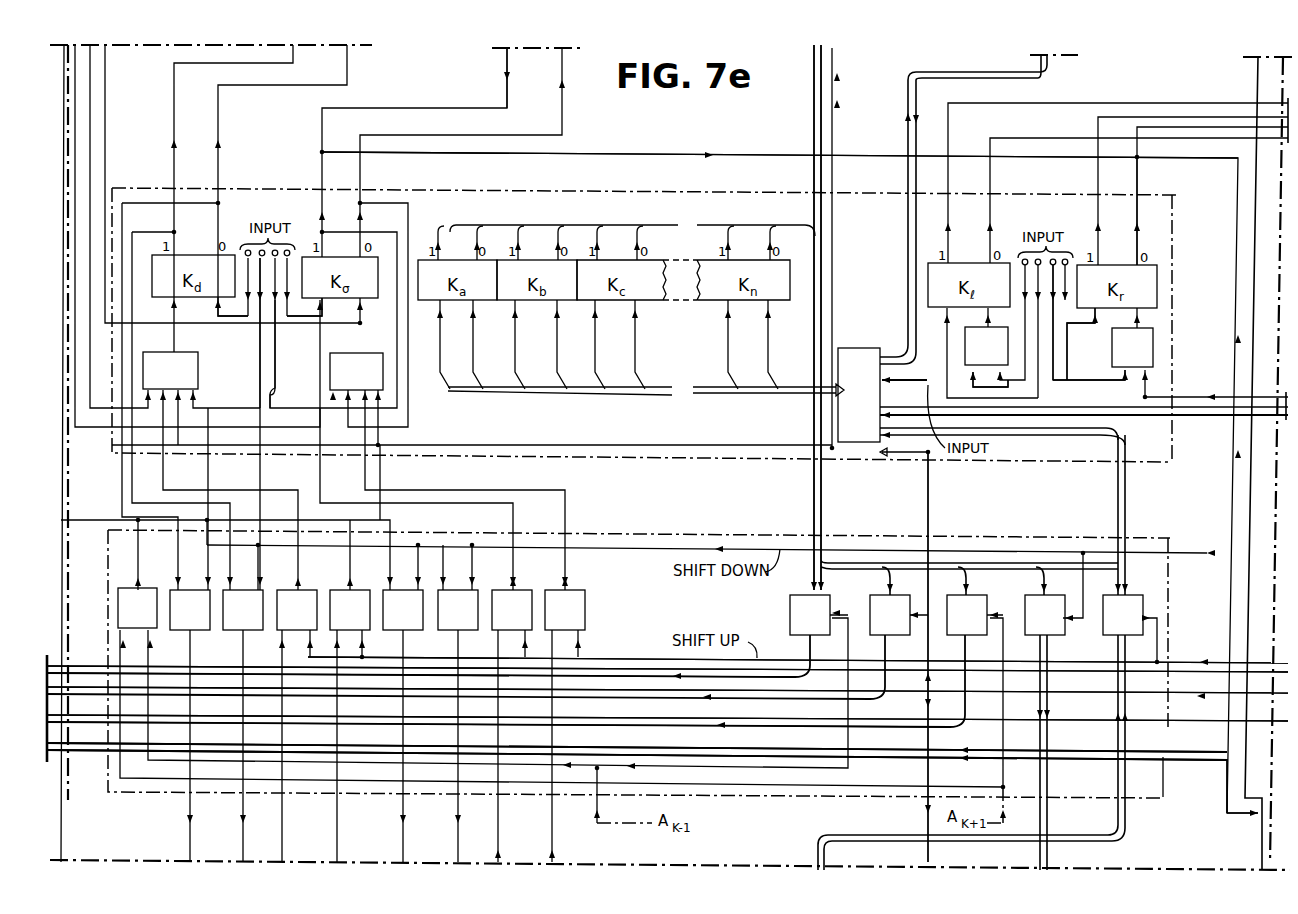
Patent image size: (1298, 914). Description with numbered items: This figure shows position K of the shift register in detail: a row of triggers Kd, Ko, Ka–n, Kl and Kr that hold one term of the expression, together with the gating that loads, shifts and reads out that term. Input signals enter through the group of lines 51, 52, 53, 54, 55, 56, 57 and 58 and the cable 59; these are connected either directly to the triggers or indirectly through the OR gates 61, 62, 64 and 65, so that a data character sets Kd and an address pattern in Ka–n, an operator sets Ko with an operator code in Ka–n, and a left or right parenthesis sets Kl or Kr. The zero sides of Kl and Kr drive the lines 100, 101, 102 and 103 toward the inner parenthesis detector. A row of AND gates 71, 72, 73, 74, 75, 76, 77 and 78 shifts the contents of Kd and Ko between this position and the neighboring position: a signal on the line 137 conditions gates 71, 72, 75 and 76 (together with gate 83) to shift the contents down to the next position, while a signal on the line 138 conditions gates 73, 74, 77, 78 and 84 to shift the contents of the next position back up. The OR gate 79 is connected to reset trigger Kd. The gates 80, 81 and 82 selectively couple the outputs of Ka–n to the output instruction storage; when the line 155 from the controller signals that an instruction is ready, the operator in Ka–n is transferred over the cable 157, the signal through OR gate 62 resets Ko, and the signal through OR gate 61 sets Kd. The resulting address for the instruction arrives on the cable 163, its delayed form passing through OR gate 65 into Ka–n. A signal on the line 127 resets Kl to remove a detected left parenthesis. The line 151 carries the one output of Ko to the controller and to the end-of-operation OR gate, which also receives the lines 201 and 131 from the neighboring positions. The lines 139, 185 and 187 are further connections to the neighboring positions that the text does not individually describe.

The input line 51 is at (240, 318).
The input line 52 is at (258, 377).
The input line 53 is at (272, 398).
The input line 54 is at (312, 318).
The input line 55 is at (990, 381).
The input line 56 is at (947, 336).
The input line 57 is at (1060, 380).
The input line 58 is at (1076, 330).
The cable 59 is at (912, 380).
The OR gate 61 is at (194, 352).
The OR gate 62 is at (375, 358).
The OR gate 64 is at (1153, 350).
The OR gate 65 is at (866, 350).
The AND gate 71 is at (193, 630).
The AND gate 72 is at (247, 630).
The AND gate 73 is at (308, 590).
The AND gate 74 is at (358, 590).
The AND gate 75 is at (410, 630).
The AND gate 76 is at (462, 630).
The AND gate 77 is at (520, 592).
The AND gate 78 is at (585, 602).
The OR gate 79 is at (148, 590).
The gate 80 is at (790, 612).
The gate 81 is at (870, 605).
The gate 82 is at (985, 604).
The gate 83 is at (1058, 598).
The gate 84 is at (1138, 600).
The line 100 is at (1215, 103).
The line 101 is at (1098, 122).
The line 102 is at (1139, 157).
The line 103 is at (1245, 140).
The line 127 is at (1212, 396).
The line 131 is at (503, 835).
The line 137 is at (620, 549).
The line 138 is at (634, 658).
The line 139 is at (558, 835).
The line 151 is at (506, 70).
The line 155 is at (838, 112).
The cable 157 is at (232, 694).
The cable 163 is at (100, 753).
The bus line 185 is at (100, 722).
The bus line 187 is at (95, 667).
The line 201 is at (1258, 815).